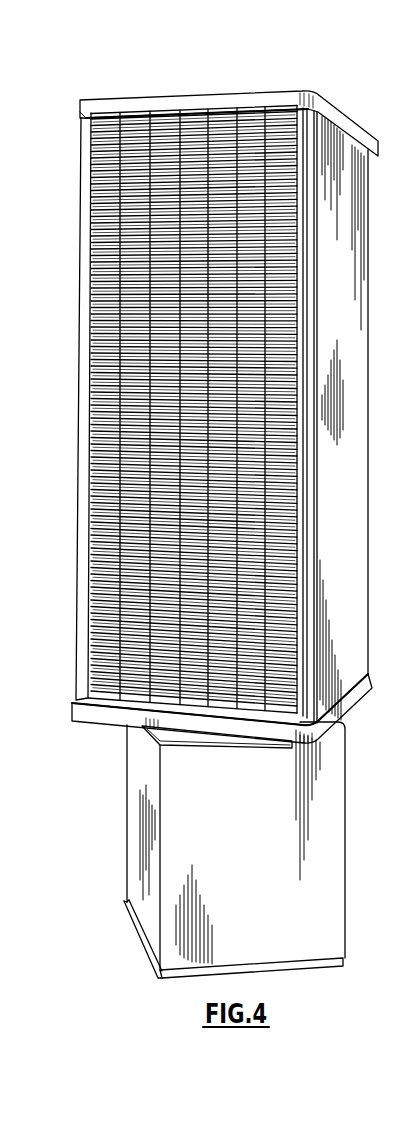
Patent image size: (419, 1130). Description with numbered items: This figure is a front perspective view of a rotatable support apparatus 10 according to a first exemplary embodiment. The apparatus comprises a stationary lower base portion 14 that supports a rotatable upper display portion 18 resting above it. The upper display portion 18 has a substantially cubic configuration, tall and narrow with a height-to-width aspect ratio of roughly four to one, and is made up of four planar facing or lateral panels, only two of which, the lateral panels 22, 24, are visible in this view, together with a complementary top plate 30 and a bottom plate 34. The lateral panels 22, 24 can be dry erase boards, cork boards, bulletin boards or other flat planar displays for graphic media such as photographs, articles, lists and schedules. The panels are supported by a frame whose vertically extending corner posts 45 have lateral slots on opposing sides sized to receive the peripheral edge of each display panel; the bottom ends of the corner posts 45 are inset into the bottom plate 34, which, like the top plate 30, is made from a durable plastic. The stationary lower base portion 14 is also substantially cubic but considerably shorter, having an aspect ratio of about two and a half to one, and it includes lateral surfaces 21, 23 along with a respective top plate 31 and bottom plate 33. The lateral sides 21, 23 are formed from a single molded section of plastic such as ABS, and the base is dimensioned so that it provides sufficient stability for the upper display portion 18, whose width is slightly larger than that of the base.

The rotatable support apparatus 10 is at (86, 86).
The stationary lower base portion 14 is at (104, 870).
The rotatable upper display portion 18 is at (70, 404).
The lateral surface 21 is at (130, 821).
The lateral panel 22 is at (132, 201).
The lateral surface 23 is at (318, 843).
The lateral panel 24 is at (330, 130).
The top plate 30 is at (114, 100).
The top plate 31 is at (150, 739).
The bottom plate 33 is at (136, 930).
The bottom plate 34 is at (72, 711).
The corner post 45 is at (78, 641).